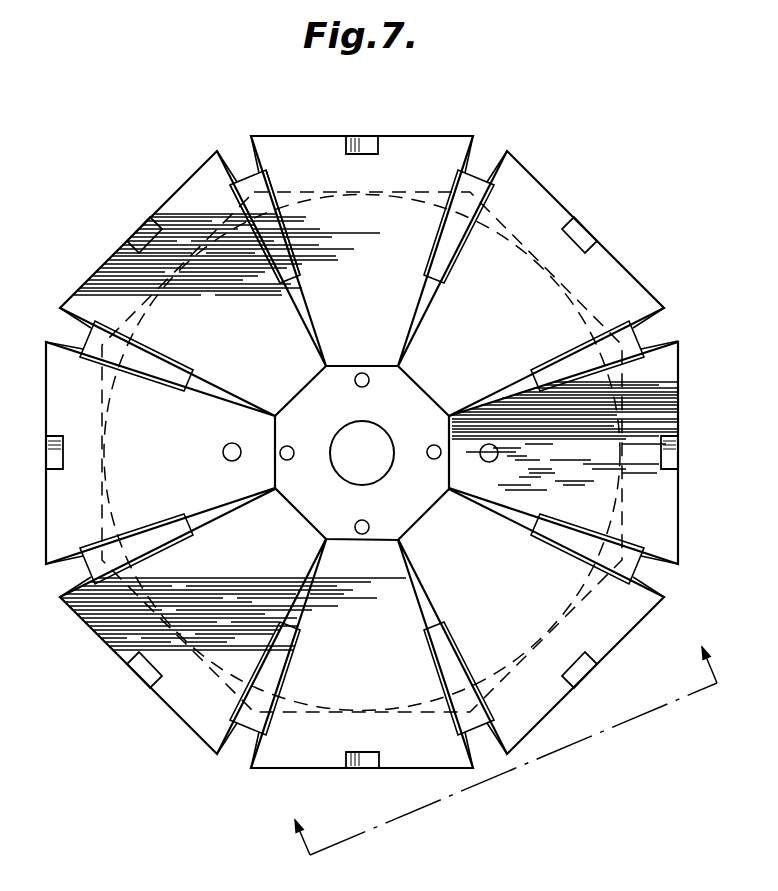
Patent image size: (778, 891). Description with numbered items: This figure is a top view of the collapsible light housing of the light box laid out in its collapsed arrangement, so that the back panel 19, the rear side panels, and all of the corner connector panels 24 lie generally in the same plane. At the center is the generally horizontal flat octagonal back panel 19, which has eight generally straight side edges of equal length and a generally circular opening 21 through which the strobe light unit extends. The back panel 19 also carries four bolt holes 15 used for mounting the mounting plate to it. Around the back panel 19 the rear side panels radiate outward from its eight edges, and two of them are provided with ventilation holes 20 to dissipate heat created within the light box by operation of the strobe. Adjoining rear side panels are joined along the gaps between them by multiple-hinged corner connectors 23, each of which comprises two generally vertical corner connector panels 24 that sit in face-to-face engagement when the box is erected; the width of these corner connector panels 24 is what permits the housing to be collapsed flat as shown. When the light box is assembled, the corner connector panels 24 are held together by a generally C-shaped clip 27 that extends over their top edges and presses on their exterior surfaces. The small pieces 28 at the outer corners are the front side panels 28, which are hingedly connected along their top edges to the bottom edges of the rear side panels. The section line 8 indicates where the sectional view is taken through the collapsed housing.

The section line 8- 8 is at (502, 738).
The bolt holes 15 is at (362, 373).
The back panel 19 is at (412, 398).
The ventilation holes 20 is at (223, 452).
The circular opening 21 is at (374, 466).
The corner connector 23 is at (242, 170).
The corner connector panels 24 is at (288, 255).
The C-shaped clip 27 is at (138, 236).
The front side panels 28 is at (488, 178).